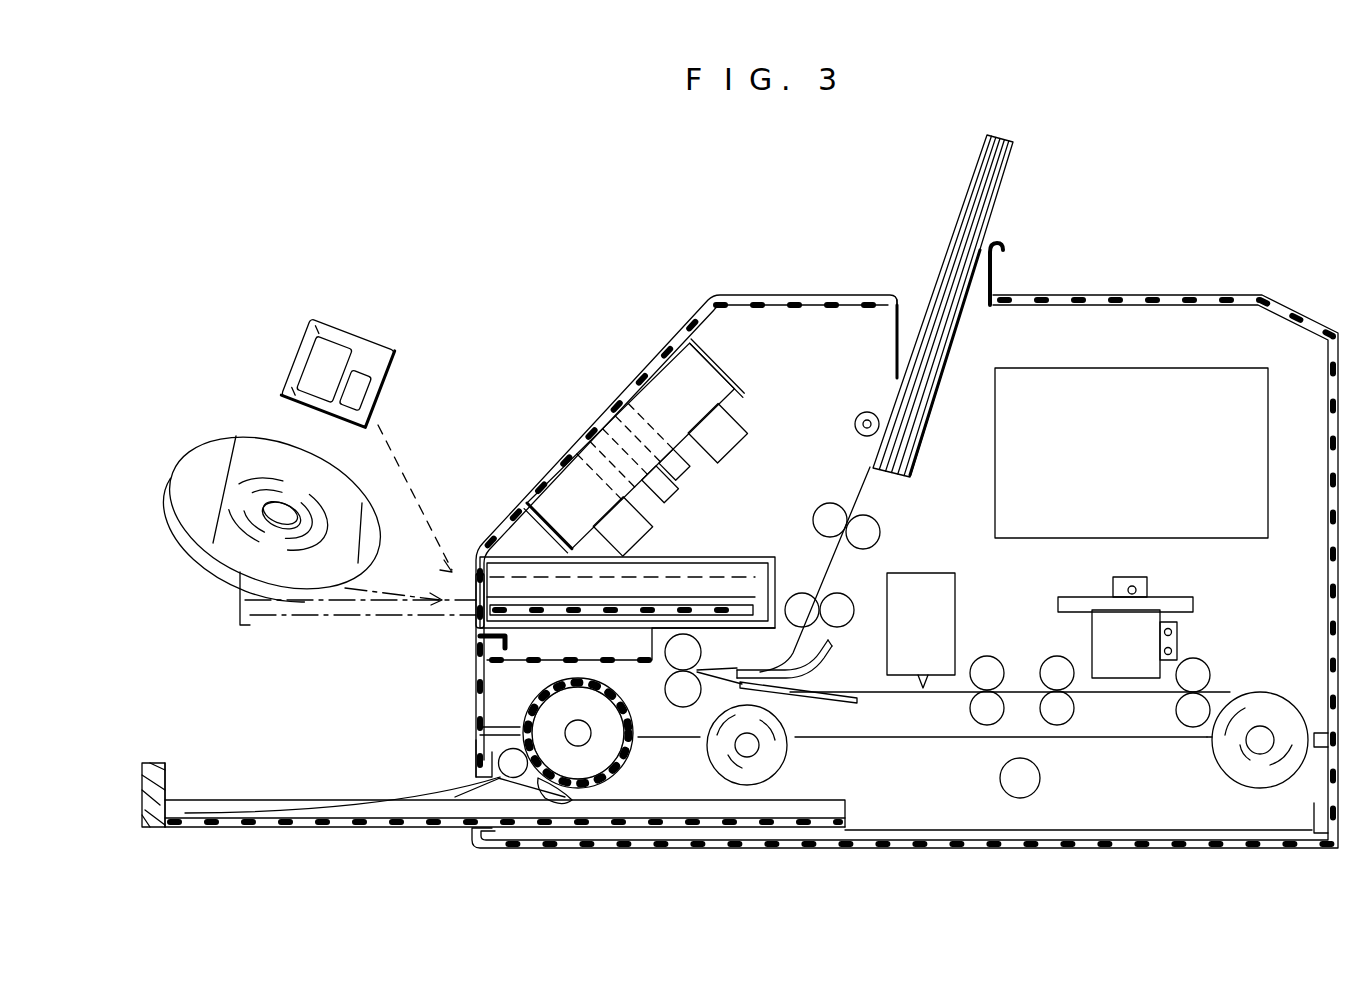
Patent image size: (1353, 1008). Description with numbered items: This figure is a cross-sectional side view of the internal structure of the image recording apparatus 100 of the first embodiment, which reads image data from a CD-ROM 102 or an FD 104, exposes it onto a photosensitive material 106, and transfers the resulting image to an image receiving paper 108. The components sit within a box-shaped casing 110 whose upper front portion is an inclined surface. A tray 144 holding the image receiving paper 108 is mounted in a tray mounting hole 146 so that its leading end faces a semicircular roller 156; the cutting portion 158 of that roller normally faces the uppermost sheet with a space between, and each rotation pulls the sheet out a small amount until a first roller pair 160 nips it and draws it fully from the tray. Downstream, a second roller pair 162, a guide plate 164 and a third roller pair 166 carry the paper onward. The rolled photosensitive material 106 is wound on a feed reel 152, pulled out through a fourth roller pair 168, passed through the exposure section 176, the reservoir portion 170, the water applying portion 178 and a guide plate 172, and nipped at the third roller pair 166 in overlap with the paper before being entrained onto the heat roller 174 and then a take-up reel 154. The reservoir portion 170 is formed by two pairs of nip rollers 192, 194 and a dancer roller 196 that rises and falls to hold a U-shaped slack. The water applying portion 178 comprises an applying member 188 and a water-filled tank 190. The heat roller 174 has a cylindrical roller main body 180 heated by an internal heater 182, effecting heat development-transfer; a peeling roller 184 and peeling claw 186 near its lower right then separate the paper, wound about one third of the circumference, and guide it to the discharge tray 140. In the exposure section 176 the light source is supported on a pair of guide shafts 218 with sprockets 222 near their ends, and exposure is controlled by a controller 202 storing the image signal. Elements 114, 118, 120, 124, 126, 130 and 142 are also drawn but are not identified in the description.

The image recording apparatus 100 is at (680, 262).
The CD-ROM 102 is at (236, 436).
The FD 104 is at (375, 332).
The photosensitive material 106 is at (1226, 690).
The image receiving paper 108 is at (990, 188).
The casing 110 is at (812, 296).
The print head 114 is at (660, 380).
The ink cartridge 118 is at (655, 537).
The ink cartridge 120 is at (742, 410).
The door 124 is at (470, 634).
The insertion slot 126 is at (520, 575).
The inserted medium 130 is at (476, 582).
The discharge tray 140 is at (288, 828).
The tray stopper 142 is at (170, 800).
The tray 144 is at (1010, 178).
The tray mounting hole 146 is at (897, 360).
The feed reel 152 is at (1260, 760).
The take-up reel 154 is at (755, 755).
The semicircular roller 156 is at (858, 413).
The cutting portion 158 is at (860, 437).
The first roller pair 160 is at (882, 537).
The second roller pair 162 is at (855, 594).
The guide plate 164 is at (836, 646).
The third roller pair 166 is at (707, 645).
The fourth roller pair 168 is at (1200, 653).
The reservoir portion 170 is at (1018, 810).
The guide plate 172 is at (853, 702).
The heat roller 174 is at (625, 776).
The exposure section 176 is at (1180, 601).
The water applying portion 178 is at (960, 603).
The roller main body 180 is at (590, 790).
The heater 182 is at (575, 730).
The peeling roller 184 is at (510, 758).
The peeling claw 186 is at (545, 800).
The applying member 188 is at (928, 690).
The tank 190 is at (940, 638).
The nip rollers 192 is at (1067, 722).
The nip rollers 194 is at (985, 718).
The dancer roller 196 is at (1036, 790).
The controller 202 is at (1130, 368).
The guide shafts 218 is at (1160, 648).
The sprockets 222 is at (1125, 585).